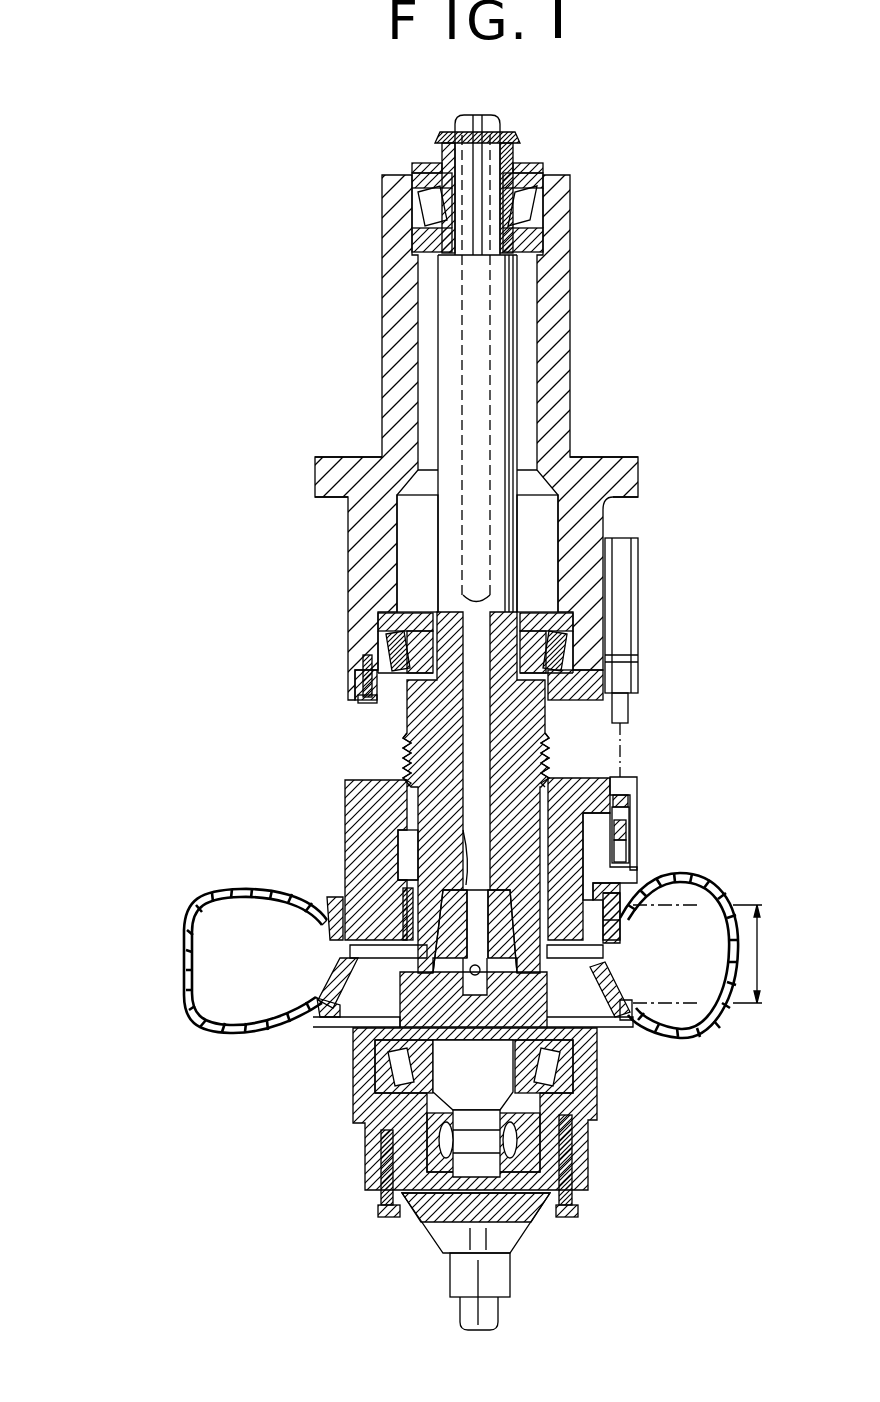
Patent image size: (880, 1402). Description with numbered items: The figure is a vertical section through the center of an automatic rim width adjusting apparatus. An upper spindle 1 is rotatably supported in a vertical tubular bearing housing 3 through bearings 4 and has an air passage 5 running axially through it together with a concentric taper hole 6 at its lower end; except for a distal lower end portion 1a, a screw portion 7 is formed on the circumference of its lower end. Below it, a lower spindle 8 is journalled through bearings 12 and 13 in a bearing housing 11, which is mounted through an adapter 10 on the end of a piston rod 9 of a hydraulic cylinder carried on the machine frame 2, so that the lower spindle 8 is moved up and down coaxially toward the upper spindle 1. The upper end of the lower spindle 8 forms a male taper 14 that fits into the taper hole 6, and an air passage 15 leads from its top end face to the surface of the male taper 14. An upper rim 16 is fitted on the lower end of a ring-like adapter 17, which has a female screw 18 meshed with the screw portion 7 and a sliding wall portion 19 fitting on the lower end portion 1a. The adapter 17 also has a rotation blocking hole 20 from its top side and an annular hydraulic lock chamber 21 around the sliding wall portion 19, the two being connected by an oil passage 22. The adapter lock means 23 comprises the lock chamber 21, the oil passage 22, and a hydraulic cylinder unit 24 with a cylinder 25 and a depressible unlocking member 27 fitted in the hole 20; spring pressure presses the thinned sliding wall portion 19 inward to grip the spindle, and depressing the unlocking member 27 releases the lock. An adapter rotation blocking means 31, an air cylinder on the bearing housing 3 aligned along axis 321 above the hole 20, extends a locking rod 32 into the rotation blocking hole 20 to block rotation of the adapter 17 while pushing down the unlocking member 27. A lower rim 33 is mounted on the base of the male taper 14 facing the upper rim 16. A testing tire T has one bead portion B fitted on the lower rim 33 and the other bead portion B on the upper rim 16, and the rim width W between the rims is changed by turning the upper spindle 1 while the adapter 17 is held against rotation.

The upper spindle 1 is at (440, 345).
The distal lower end portion 1a is at (400, 845).
The machine frame 2 is at (620, 457).
The bearing housing 3 is at (382, 405).
The bearings 4 is at (562, 203).
The central bore of spindle 5 is at (480, 292).
The taper hole 6 is at (460, 893).
The screw portion 7 is at (405, 745).
The lower spindle 8 is at (420, 1225).
The piston rod 9 is at (510, 1276).
The adapter 10 is at (525, 1205).
The bearing housing 11 is at (360, 1115).
The bearing 12 is at (395, 1060).
The bearing 13 is at (430, 1125).
The male taper 14 is at (347, 975).
The air passage 15 is at (477, 975).
The upper rim 16 is at (622, 913).
The adapter 17 is at (345, 778).
The female screw 18 is at (548, 778).
The sliding wall portion 19 is at (418, 860).
The rotation blocking hole 20 is at (625, 778).
The hydraulic lock chamber 21 is at (410, 900).
The oil passage 22 is at (637, 870).
The adapter lock means 23 is at (640, 808).
The hydraulic cylinder unit 24 is at (626, 832).
The cylinder 25 is at (626, 850).
The unlocking member 27 is at (622, 800).
The adapter rotation blocking means 31 is at (640, 590).
The locking rod 32 is at (630, 702).
The plunger axis 321 is at (625, 740).
The lower rim 33 is at (622, 1018).
The bead portion B is at (330, 925).
The testing tire T is at (717, 890).
The rim width W is at (709, 954).